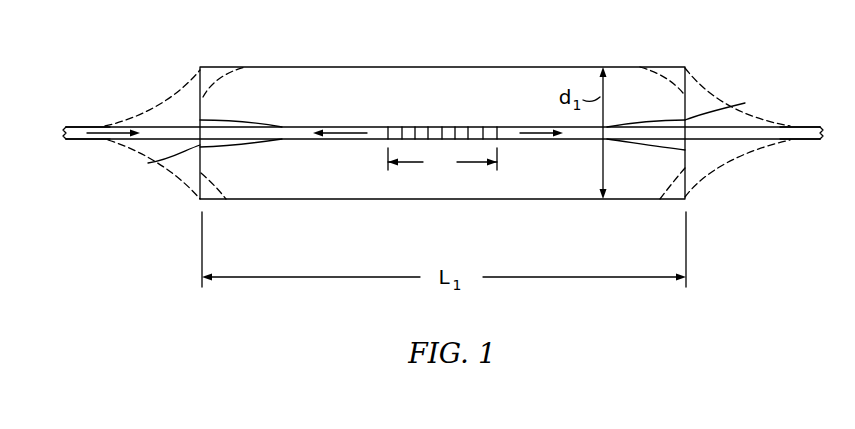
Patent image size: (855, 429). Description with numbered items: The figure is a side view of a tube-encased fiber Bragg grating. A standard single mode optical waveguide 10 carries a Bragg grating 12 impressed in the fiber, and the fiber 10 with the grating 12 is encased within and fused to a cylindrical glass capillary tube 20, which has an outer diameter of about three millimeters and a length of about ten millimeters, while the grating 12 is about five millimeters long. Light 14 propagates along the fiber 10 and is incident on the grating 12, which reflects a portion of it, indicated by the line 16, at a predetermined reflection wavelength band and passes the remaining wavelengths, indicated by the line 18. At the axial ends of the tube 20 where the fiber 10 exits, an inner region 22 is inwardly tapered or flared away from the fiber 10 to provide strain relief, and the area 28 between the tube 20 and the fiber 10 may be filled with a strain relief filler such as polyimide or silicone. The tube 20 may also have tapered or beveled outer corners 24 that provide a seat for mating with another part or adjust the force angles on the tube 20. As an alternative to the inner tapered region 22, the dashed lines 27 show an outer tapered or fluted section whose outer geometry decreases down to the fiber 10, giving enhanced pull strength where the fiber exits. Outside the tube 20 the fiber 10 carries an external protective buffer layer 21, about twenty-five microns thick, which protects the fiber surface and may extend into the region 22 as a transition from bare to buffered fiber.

The optical waveguide 10 is at (310, 127).
The Bragg grating 12 is at (388, 118).
The light 14 is at (88, 136).
The reflected light 16 is at (347, 137).
The transmitted light 18 is at (545, 137).
The cylindrical glass capillary tube 20 is at (378, 64).
The external protective buffer layer 21 is at (78, 126).
The inner tapered region 22 is at (243, 117).
The beveled corners 24 is at (248, 67).
The outer tapered section 27 is at (188, 80).
The area between tube and fiber 28 is at (443, 133).